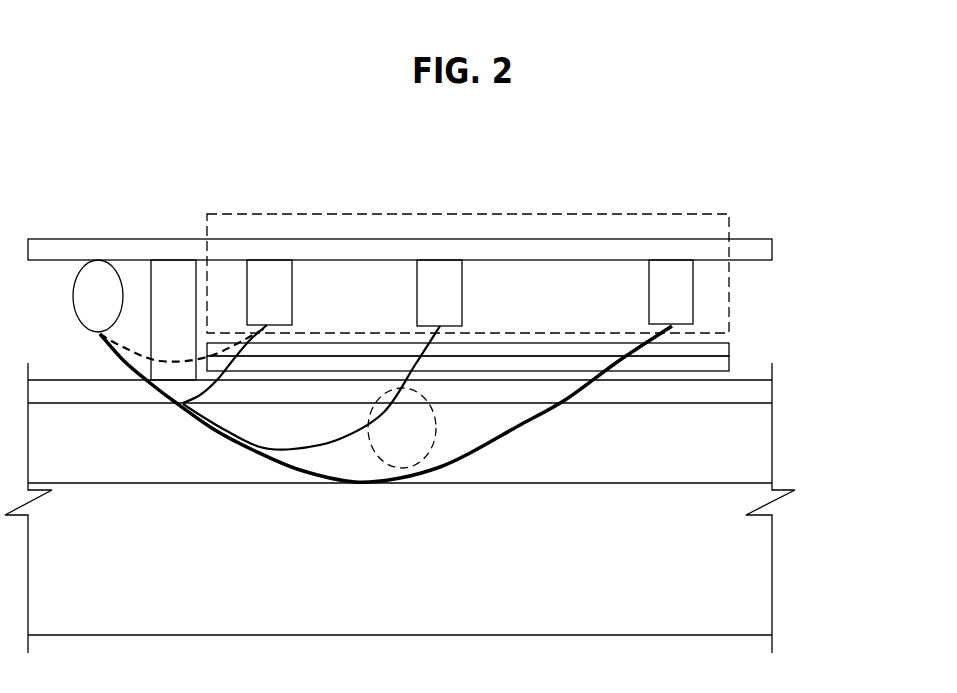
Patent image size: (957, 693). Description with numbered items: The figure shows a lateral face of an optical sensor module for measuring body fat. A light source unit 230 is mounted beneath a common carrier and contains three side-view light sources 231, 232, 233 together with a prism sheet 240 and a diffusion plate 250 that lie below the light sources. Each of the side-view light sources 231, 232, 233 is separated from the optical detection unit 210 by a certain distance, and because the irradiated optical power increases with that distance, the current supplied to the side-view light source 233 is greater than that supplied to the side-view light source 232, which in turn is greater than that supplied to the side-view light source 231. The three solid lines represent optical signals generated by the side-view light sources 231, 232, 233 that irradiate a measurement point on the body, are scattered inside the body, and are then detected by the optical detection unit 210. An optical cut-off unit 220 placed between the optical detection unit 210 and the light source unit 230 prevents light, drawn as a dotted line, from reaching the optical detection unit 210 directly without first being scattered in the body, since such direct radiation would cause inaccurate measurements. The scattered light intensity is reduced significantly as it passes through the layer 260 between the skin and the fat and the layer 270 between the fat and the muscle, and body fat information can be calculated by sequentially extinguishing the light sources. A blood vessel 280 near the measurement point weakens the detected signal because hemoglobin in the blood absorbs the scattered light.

The optical detection unit 210 is at (97, 272).
The optical cut-off unit 220 is at (178, 272).
The light source unit 230 is at (729, 214).
The side-view light source 231 is at (270, 272).
The side-view light source 232 is at (443, 272).
The side-view light source 233 is at (677, 272).
The prism sheet 240 is at (730, 345).
The diffusion plate 250 is at (730, 362).
The layer between the skin and the fat 260 is at (735, 403).
The layer between the fat and the muscle 270 is at (735, 483).
The blood vessel 280 is at (433, 440).